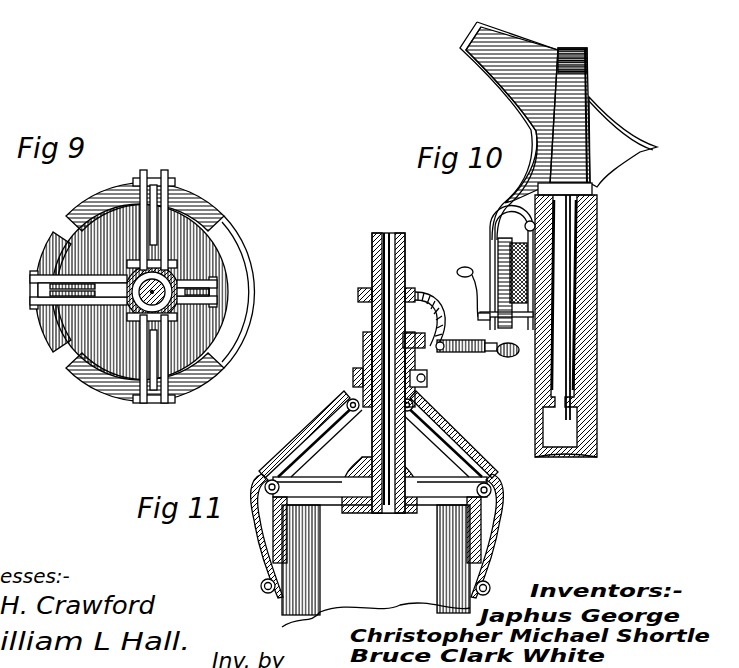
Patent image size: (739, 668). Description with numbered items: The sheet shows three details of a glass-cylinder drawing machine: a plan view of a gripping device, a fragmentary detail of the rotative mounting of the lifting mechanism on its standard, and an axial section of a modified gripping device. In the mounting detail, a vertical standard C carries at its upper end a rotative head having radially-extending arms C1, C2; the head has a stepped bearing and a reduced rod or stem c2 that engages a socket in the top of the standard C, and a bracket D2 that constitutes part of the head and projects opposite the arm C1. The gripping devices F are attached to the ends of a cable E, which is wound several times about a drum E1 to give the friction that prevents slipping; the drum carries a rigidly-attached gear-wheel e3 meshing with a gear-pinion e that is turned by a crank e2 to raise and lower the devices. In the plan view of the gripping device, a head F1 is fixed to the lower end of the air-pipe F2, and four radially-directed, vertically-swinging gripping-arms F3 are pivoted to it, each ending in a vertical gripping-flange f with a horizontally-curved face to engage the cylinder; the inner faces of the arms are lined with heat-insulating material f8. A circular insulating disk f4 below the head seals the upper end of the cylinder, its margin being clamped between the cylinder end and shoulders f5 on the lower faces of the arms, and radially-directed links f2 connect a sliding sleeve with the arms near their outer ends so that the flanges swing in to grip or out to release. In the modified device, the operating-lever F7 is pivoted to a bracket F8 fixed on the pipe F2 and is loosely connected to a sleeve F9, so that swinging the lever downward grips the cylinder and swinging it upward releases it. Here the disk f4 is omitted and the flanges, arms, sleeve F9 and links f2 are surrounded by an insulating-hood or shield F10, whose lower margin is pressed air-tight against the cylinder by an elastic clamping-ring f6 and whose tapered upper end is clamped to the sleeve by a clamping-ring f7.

In FIG. 9, the gripping device F is at (165, 243).
In FIG. 9, the head F1 is at (190, 262).
In FIG. 11, the head F1 is at (418, 512).
In FIG. 11, the air-pipe F2 is at (407, 255).
In FIG. 9, the gripping-arms F3 is at (95, 322).
In FIG. 11, the gripping-arms F3 is at (315, 478).
In FIG. 11, the operating-lever F7 is at (470, 353).
In FIG. 11, the bracket F8 is at (495, 300).
In FIG. 11, the sleeve F9 is at (368, 348).
In FIG. 11, the insulating-hood or shield F10 is at (433, 413).
In FIG. 9, the gripping-flanges f is at (33, 243).
In FIG. 11, the gripping-flanges f is at (273, 537).
In FIG. 9, the links f2 is at (173, 195).
In FIG. 11, the links f2 is at (320, 425).
In FIG. 9, the sealing and insulating disk f4 is at (97, 322).
In FIG. 11, the shoulders f5 is at (262, 483).
In FIG. 11, the elastic clamping-ring f6 is at (261, 585).
In FIG. 11, the clamping-ring f7 is at (352, 375).
In FIG. 11, the heat-insulating material f8 is at (282, 545).
In FIG. 10, the vertical standard C is at (583, 320).
In FIG. 10, the arm C1 is at (512, 63).
In FIG. 10, the arm C2 is at (587, 73).
In FIG. 10, the reduced rod or stem c2 is at (569, 277).
In FIG. 10, the bracket D2 is at (633, 130).
In FIG. 10, the cable E is at (518, 233).
In FIG. 10, the drum E1 is at (513, 258).
In FIG. 10, the gear-pinion e is at (505, 320).
In FIG. 10, the crank e2 is at (470, 285).
In FIG. 10, the gear-wheel e3 is at (490, 317).